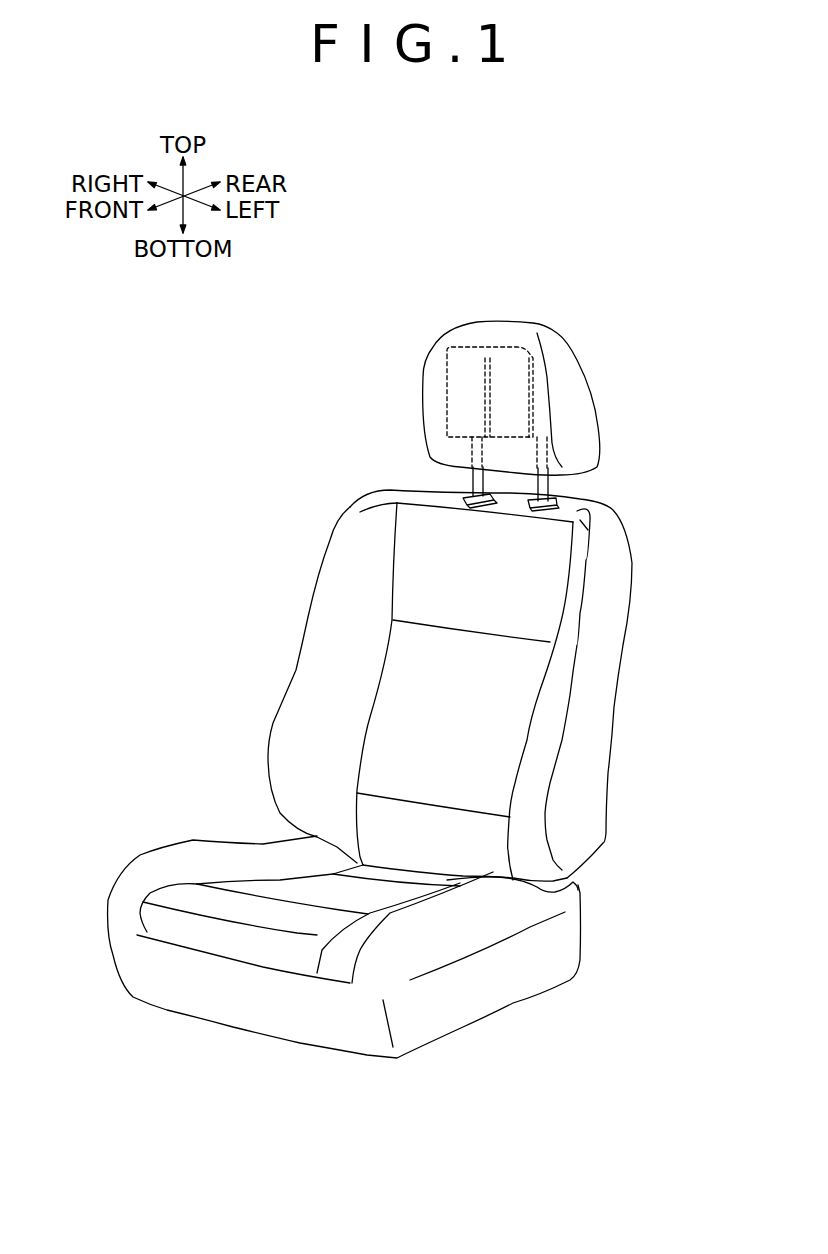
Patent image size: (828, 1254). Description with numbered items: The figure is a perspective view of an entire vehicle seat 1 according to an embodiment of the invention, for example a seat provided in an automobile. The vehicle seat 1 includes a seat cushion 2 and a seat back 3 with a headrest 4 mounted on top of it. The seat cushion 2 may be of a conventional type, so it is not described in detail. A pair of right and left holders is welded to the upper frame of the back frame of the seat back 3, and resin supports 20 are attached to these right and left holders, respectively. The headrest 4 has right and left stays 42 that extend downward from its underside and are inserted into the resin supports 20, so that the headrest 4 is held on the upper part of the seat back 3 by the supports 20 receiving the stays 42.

The vehicle seat 1 is at (170, 492).
The seat cushion 2 is at (192, 842).
The seat back 3 is at (315, 582).
The headrest 4 is at (422, 372).
The resin supports 20 is at (458, 493).
The stays 42 is at (473, 481).